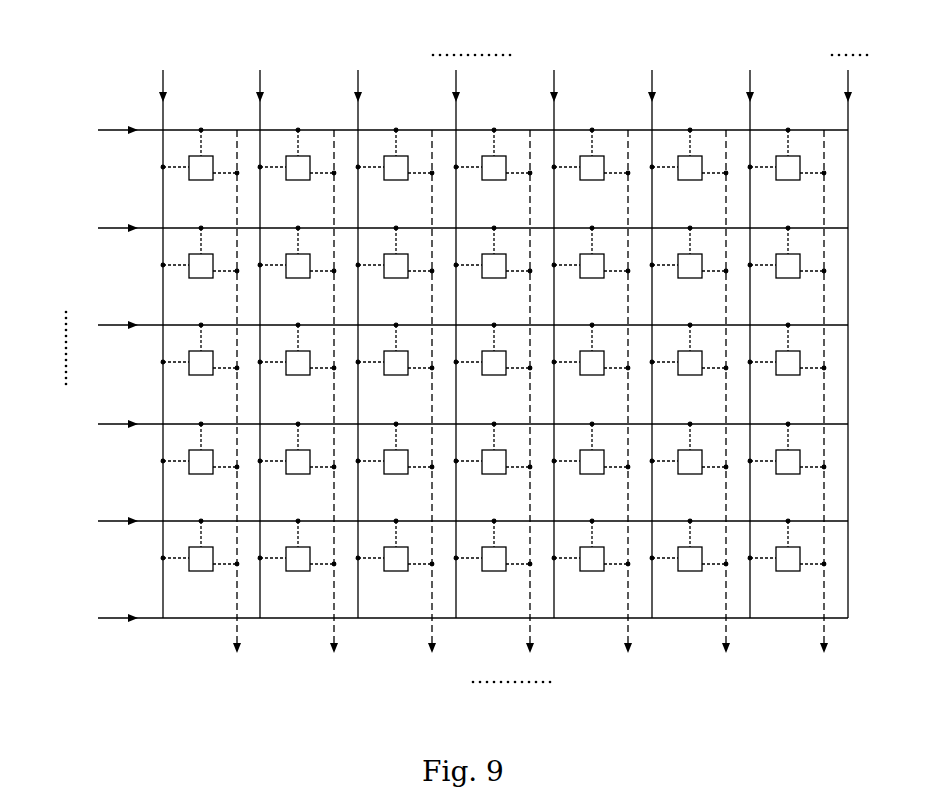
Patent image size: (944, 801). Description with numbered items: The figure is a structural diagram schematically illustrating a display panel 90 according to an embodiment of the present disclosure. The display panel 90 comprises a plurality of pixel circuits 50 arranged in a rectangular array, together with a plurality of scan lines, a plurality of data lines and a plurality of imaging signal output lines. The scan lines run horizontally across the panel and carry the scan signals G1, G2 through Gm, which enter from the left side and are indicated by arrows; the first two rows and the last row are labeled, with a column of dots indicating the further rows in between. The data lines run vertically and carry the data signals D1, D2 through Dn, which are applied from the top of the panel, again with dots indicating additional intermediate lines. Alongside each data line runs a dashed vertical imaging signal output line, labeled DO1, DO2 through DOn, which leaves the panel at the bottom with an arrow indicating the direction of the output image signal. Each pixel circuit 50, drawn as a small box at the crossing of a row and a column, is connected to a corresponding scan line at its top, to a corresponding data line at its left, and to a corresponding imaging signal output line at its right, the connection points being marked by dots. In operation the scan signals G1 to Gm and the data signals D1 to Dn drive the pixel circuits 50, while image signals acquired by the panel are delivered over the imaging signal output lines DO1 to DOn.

The display panel 90 is at (76, 33).
The pixel circuit 50 is at (212, 158).
The scan signal G1 is at (457, 130).
The scan signal G2 is at (457, 228).
The scan signal Gm is at (454, 618).
The data signal D1 is at (163, 333).
The data signal D2 is at (260, 333).
The data signal Dn is at (750, 333).
The imaging signal output line DO1 is at (241, 412).
The imaging signal output line DO2 is at (339, 412).
The imaging signal output line DOn is at (829, 412).